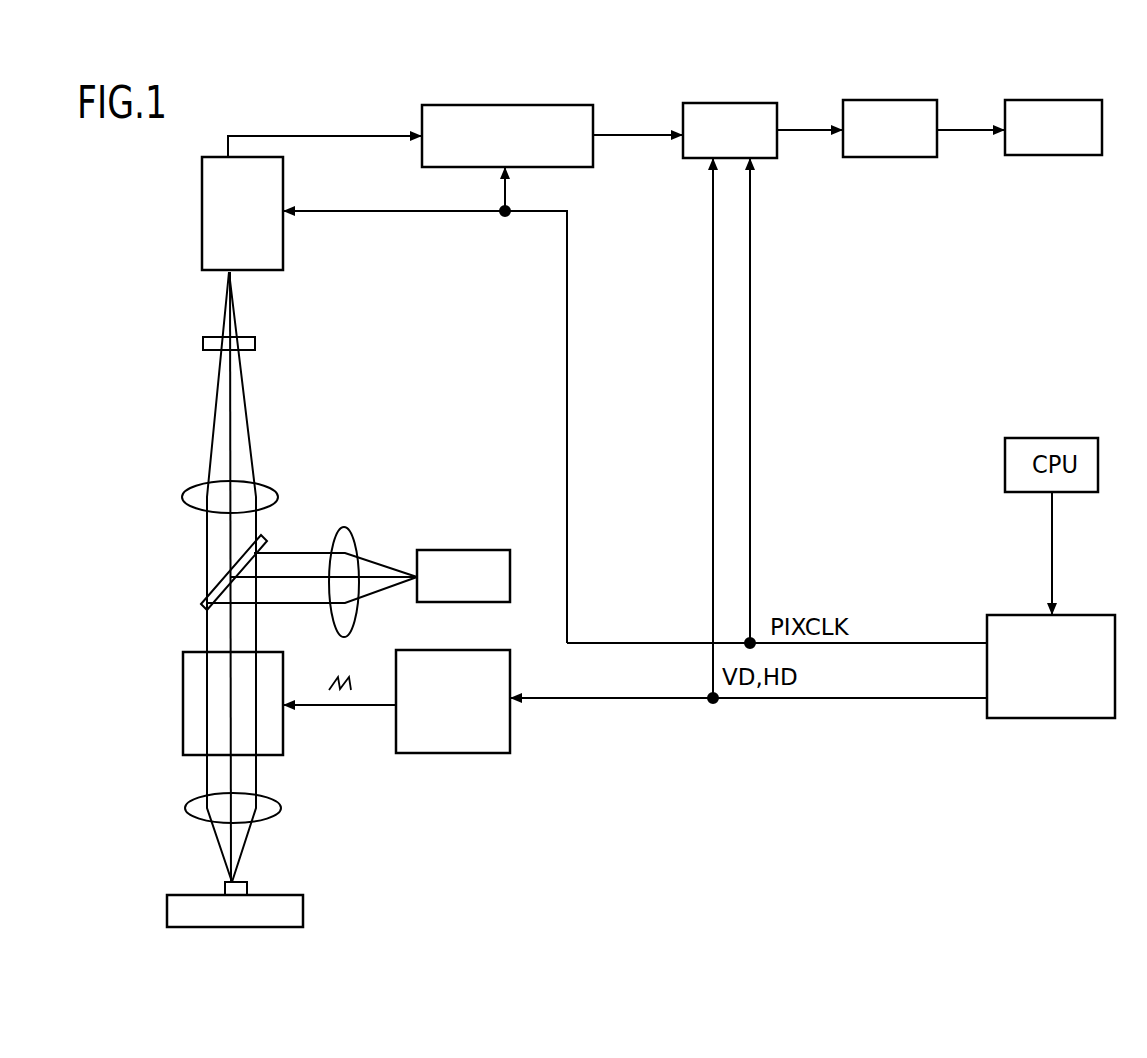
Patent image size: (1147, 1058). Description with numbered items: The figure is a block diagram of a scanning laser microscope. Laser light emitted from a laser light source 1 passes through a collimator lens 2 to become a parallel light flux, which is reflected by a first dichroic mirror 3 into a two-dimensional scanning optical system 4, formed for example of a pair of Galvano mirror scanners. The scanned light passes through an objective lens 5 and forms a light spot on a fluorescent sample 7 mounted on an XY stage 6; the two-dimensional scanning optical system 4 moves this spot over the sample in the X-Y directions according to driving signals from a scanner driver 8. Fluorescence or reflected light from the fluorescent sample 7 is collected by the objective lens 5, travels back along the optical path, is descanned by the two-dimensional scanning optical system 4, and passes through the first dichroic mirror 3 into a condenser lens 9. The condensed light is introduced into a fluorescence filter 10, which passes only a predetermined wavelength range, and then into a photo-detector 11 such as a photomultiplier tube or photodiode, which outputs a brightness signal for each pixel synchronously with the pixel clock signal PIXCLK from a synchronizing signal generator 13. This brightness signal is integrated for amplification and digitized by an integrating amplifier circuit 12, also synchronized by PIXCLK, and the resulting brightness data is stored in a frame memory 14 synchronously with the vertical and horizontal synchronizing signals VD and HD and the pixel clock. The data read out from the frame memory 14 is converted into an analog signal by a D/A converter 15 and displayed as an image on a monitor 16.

The laser light source 1 is at (450, 550).
The collimator lens 2 is at (343, 527).
The first dichroic mirror 3 is at (202, 600).
The two-dimensional scanning optical system 4 is at (183, 695).
The objective lens 5 is at (192, 797).
The XY stage 6 is at (180, 895).
The fluorescent sample 7 is at (247, 888).
The scanner driver 8 is at (432, 753).
The condenser lens 9 is at (193, 485).
The fluorescence filter 10 is at (205, 337).
The photo-detector 11 is at (203, 232).
The integrating amplifier circuit 12 is at (450, 105).
The synchronizing signal generator 13 is at (998, 615).
The frame memory 14 is at (728, 103).
The D/A converter 15 is at (878, 100).
The monitor 16 is at (1043, 100).